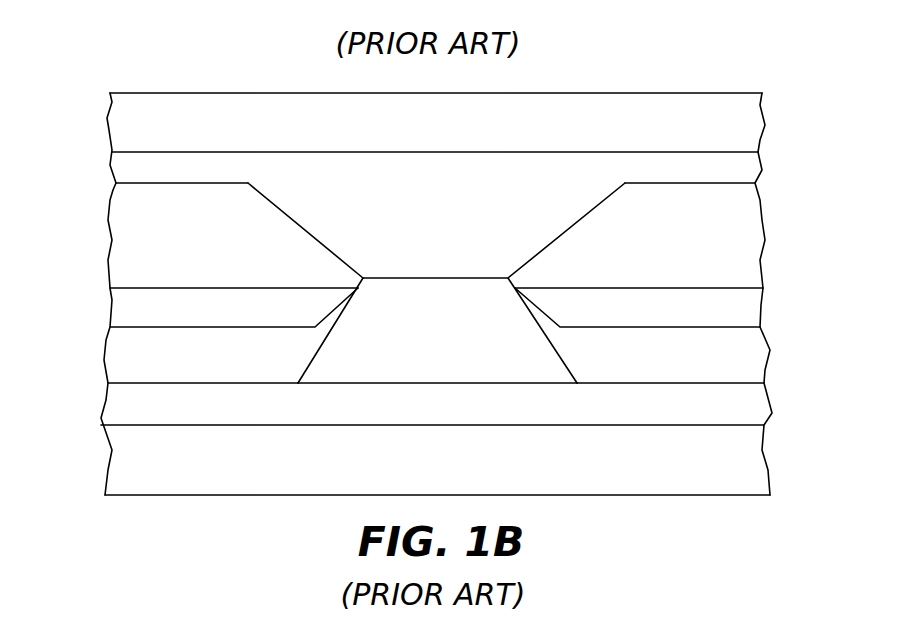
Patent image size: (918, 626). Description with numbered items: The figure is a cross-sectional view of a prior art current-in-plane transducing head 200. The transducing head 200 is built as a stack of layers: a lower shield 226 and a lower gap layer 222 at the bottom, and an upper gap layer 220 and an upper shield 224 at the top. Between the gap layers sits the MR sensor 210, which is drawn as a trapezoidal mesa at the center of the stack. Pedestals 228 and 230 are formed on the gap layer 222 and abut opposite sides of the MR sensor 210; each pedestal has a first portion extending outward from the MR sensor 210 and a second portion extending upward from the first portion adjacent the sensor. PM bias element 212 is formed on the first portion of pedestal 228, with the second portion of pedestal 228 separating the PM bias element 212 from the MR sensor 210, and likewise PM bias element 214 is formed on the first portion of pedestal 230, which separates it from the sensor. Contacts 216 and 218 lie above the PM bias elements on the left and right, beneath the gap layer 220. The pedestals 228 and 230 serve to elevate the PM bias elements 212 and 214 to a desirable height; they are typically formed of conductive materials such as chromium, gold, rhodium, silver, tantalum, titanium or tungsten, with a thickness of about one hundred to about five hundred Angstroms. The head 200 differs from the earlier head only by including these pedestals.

The CIP transducing head 200 is at (162, 55).
The MR sensor 210 is at (477, 303).
The PM bias element 212 is at (140, 313).
The PM bias element 214 is at (735, 318).
The contact 216 is at (172, 253).
The contact 218 is at (727, 236).
The gap layer 220 is at (725, 175).
The gap layer 222 is at (733, 413).
The shield 224 is at (733, 127).
The shield 226 is at (735, 473).
The pedestal 228 is at (140, 365).
The pedestal 230 is at (733, 360).